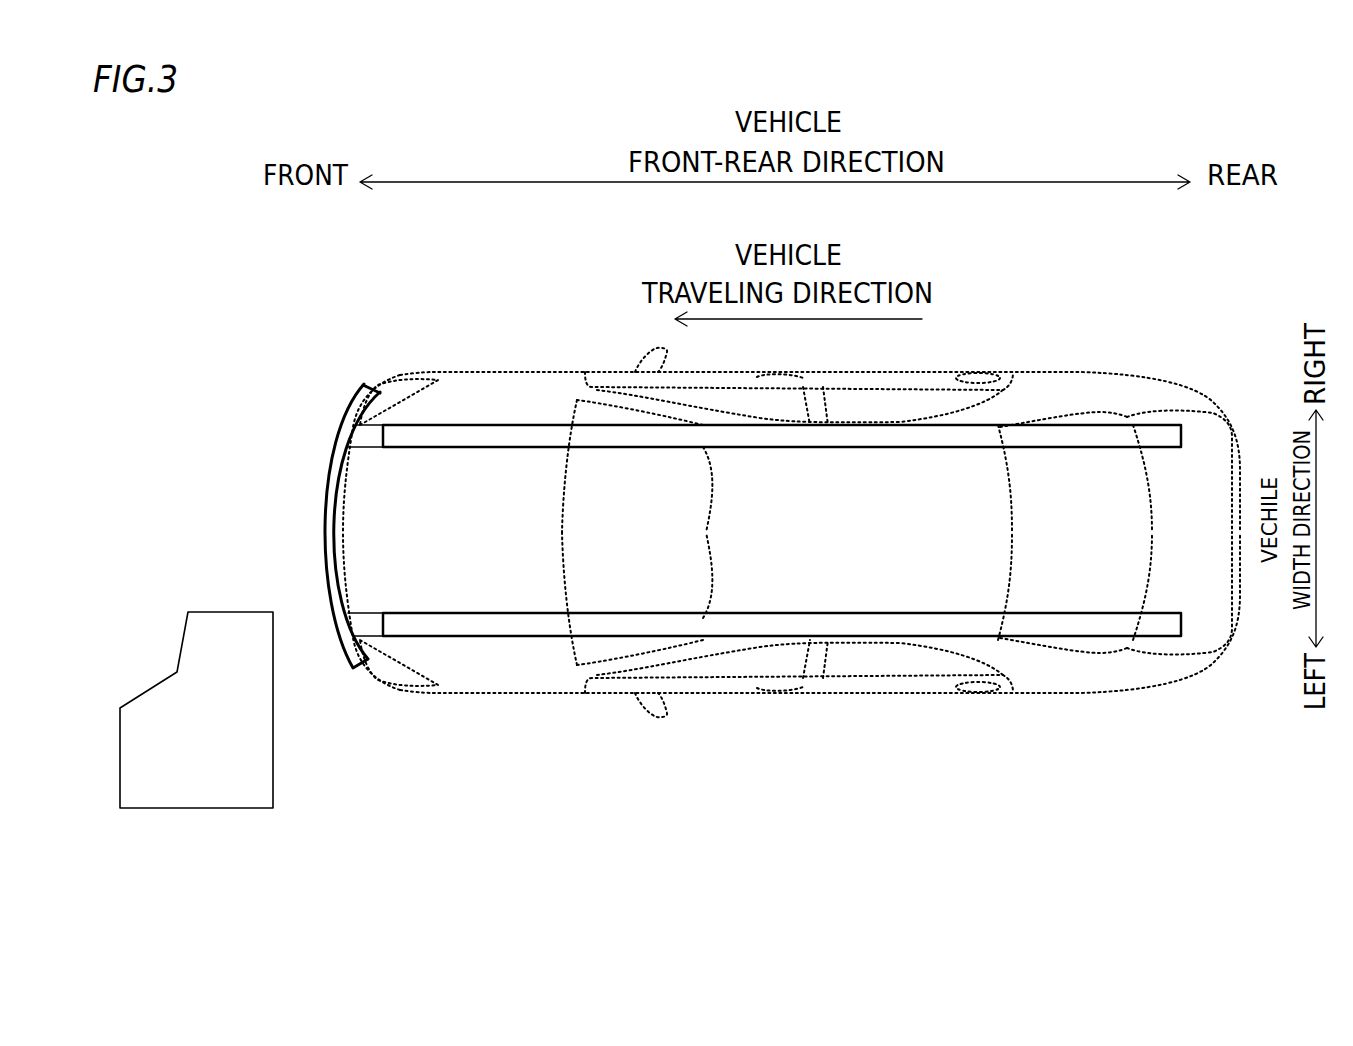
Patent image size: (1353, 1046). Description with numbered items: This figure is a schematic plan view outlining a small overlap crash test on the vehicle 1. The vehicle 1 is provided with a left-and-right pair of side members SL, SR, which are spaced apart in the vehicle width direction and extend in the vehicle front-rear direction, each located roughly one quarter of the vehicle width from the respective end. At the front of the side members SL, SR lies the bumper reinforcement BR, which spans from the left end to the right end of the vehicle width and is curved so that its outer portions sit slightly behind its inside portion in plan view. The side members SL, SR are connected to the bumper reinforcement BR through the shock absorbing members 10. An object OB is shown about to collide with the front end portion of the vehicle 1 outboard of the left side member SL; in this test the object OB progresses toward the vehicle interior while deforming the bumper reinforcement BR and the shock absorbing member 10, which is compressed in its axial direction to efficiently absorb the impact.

The vehicle 1 is at (972, 327).
The shock absorbing member 10 is at (373, 428).
The side member SR is at (490, 425).
The side member SL is at (493, 636).
The bumper reinforcement BR is at (327, 522).
The object OB is at (273, 773).